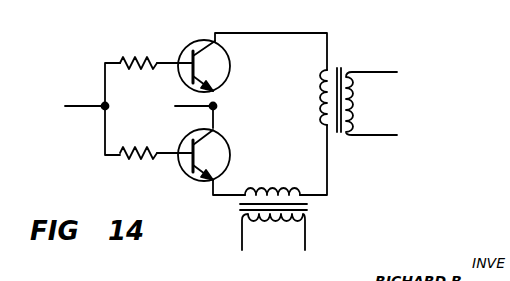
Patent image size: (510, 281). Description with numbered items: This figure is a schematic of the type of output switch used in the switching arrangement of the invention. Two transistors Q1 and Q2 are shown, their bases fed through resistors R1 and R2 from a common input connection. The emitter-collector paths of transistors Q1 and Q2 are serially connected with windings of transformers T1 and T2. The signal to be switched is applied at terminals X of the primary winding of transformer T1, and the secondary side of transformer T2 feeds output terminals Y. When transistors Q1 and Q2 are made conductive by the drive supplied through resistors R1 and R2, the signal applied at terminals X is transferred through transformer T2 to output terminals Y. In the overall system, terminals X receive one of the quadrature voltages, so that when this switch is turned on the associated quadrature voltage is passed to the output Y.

The resistor R1 is at (138, 53).
The resistor R2 is at (138, 142).
The transistor Q1 is at (215, 66).
The transistor Q2 is at (215, 155).
The transformer T1 is at (273, 219).
The transformer T2 is at (358, 101).
The terminals xx X is at (273, 263).
The terminals yy Y is at (406, 105).